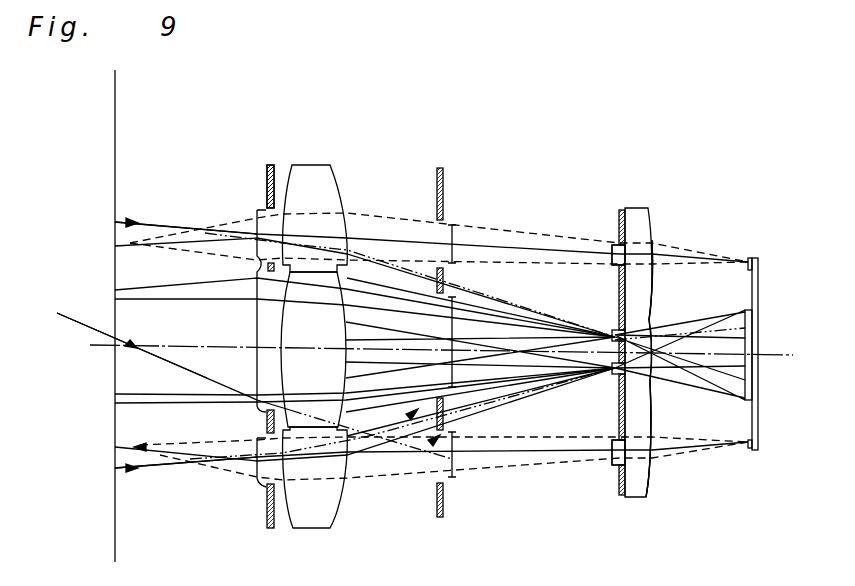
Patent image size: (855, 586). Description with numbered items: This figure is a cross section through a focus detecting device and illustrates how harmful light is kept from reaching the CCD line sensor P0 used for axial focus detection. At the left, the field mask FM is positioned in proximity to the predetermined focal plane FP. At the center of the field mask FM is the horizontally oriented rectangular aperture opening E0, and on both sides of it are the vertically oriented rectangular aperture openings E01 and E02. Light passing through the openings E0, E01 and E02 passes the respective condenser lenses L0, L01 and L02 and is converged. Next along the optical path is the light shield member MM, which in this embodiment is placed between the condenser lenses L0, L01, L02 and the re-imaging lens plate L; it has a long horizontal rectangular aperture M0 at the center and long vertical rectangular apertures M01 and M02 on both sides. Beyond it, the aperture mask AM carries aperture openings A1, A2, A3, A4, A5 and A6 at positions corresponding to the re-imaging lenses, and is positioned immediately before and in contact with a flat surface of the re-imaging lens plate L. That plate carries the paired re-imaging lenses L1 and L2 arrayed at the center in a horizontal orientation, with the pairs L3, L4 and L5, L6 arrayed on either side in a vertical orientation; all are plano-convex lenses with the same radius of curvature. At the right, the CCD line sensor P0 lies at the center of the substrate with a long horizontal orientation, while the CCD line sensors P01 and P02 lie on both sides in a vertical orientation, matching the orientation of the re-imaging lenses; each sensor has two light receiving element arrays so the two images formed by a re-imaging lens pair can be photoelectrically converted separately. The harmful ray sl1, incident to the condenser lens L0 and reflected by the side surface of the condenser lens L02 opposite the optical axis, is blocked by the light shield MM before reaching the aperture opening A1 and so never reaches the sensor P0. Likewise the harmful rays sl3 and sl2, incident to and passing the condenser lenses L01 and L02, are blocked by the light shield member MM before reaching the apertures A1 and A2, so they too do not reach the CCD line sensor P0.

The predetermined focal plane FP is at (115, 96).
The field mask FM is at (275, 166).
The rectangular aperture opening E0 is at (257, 342).
The rectangular aperture opening E01 is at (260, 209).
The rectangular aperture opening E02 is at (259, 493).
The condenser lens L01 is at (330, 165).
The condenser lens L0 is at (344, 302).
The condenser lens L02 is at (338, 497).
The light shield member MM is at (443, 168).
The rectangular aperture M01 is at (452, 245).
The rectangular aperture M0 is at (455, 336).
The rectangular aperture M02 is at (452, 470).
The aperture mask AM is at (619, 212).
The aperture opening A1 is at (612, 372).
The aperture opening A2 is at (612, 331).
The aperture opening A3 is at (612, 246).
The aperture opening A4 is at (618, 255).
The aperture opening A5 is at (612, 462).
The aperture opening A6 is at (618, 452).
The re-imaging lens plate L is at (646, 208).
The re-imaging lens L1 is at (650, 380).
The re-imaging lens L2 is at (649, 320).
The re-imaging lens L3 is at (652, 240).
The re-imaging lens L4 is at (651, 280).
The re-imaging lens L5 is at (652, 410).
The re-imaging lens L6 is at (648, 438).
The CCD line sensor P0 is at (745, 310).
The CCD line sensor P01 is at (752, 260).
The CCD line sensor P02 is at (748, 448).
The harmful ray sl1 is at (110, 339).
The harmful ray sl2 is at (133, 468).
The harmful ray sl3 is at (133, 223).